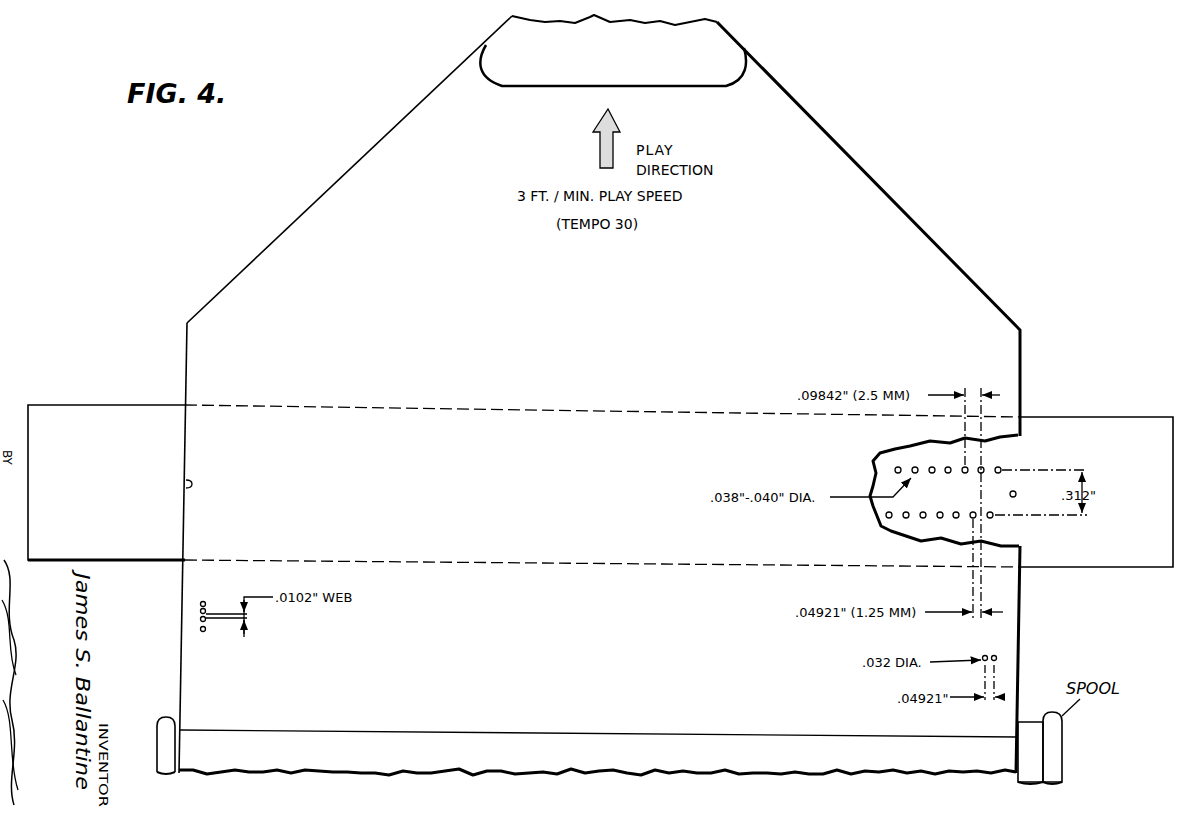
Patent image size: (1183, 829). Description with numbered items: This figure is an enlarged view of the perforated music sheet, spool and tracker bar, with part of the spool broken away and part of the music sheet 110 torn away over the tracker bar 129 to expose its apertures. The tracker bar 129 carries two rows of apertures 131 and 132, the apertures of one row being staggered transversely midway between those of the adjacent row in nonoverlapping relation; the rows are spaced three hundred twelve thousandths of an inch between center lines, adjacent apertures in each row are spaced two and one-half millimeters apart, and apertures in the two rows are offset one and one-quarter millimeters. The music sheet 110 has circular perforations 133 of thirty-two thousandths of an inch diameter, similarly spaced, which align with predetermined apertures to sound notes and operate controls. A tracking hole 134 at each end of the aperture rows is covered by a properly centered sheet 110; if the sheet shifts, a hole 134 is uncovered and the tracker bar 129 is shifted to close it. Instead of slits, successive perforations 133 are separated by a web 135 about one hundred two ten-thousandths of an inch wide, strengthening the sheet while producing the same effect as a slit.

The perforated music sheet 110 is at (1070, 624).
The tracker bar 129 is at (1093, 400).
The first row of tracker bar apertures 131 is at (1002, 466).
The second row of tracker bar apertures 132 is at (993, 519).
The music sheet perforations 133 is at (200, 629).
The tracking hole 134 is at (147, 482).
The web 135 is at (207, 629).